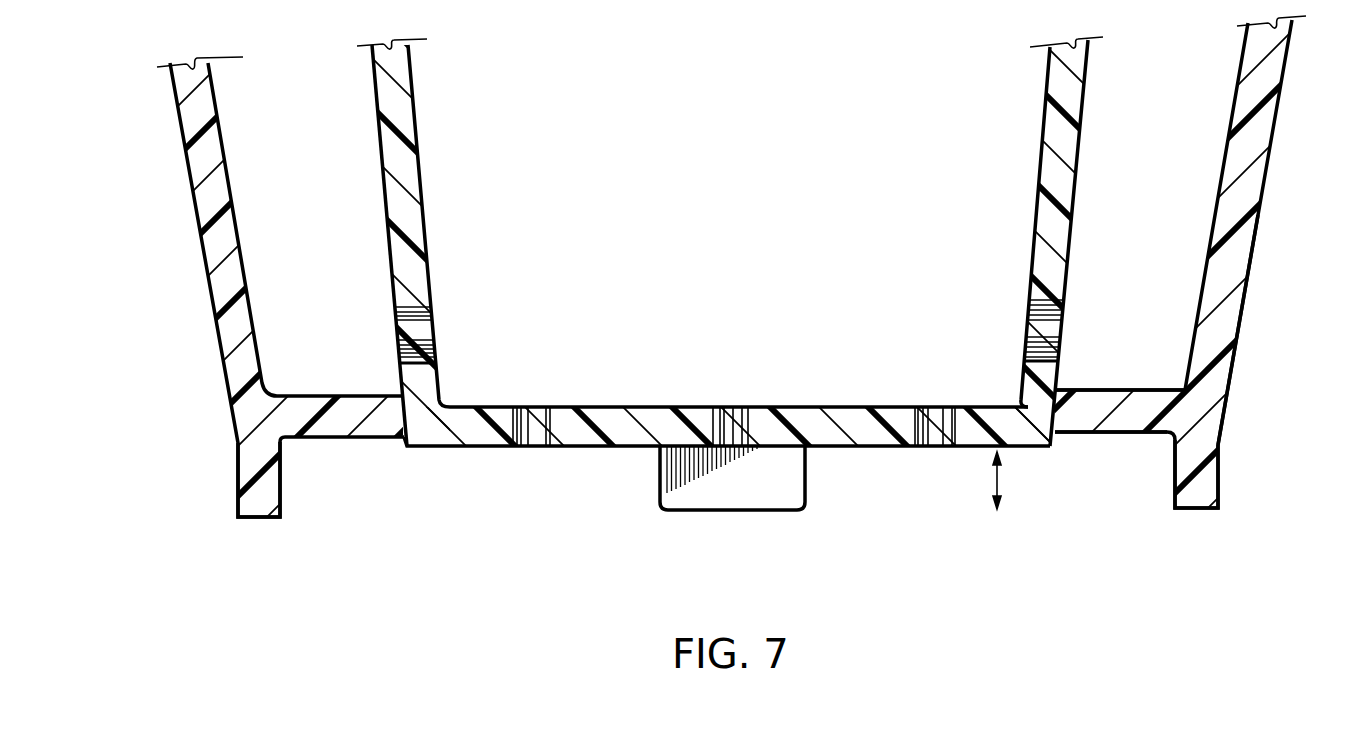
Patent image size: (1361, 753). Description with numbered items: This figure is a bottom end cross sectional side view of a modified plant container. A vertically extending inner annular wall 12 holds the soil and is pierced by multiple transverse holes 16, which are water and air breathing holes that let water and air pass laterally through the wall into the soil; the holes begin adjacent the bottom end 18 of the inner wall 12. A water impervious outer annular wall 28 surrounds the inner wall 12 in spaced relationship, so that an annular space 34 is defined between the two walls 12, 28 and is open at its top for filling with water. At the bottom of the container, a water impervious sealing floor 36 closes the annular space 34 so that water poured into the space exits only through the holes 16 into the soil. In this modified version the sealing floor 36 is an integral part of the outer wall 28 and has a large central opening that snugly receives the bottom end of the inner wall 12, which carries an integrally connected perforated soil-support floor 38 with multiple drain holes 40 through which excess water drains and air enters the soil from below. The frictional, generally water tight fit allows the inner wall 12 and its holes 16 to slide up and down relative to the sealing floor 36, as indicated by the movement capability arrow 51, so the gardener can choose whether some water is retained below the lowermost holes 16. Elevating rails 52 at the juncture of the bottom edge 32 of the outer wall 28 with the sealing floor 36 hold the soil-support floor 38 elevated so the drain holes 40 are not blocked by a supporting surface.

The inner annular wall 12 is at (412, 66).
The transverse holes 16 is at (433, 323).
The bottom end of inner wall 18 is at (440, 396).
The outer annular wall 28 is at (1263, 208).
The bottom edge of outer wall 32 is at (1230, 388).
The annular space 34 is at (265, 167).
The sealing floor 36 is at (1128, 390).
The soil-support floor 38 is at (820, 406).
The drain holes 40 is at (732, 438).
The movement capability arrow 51 is at (1005, 483).
The elevating rails 52 is at (238, 509).